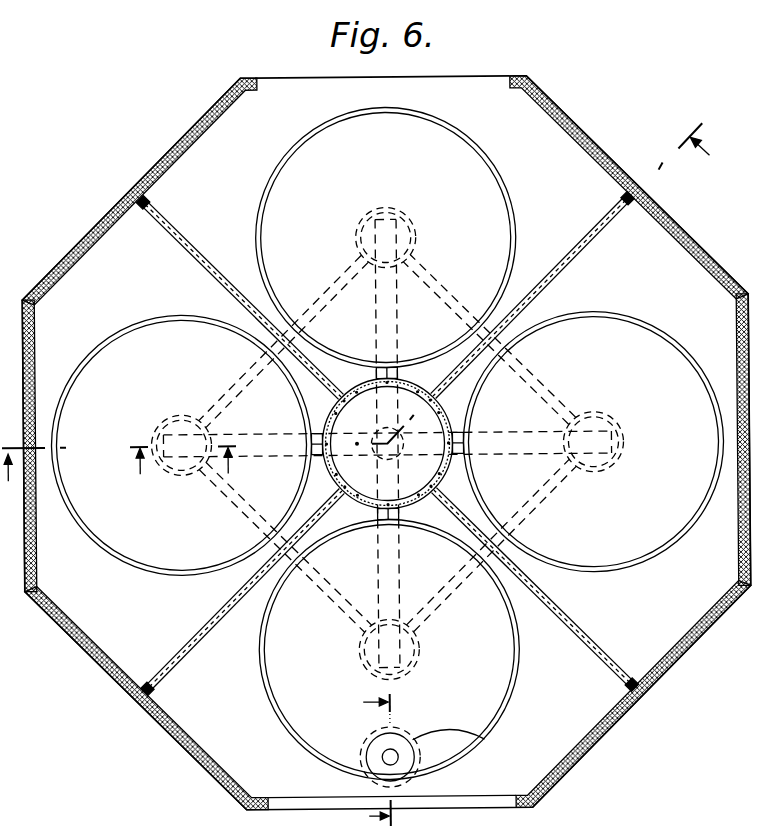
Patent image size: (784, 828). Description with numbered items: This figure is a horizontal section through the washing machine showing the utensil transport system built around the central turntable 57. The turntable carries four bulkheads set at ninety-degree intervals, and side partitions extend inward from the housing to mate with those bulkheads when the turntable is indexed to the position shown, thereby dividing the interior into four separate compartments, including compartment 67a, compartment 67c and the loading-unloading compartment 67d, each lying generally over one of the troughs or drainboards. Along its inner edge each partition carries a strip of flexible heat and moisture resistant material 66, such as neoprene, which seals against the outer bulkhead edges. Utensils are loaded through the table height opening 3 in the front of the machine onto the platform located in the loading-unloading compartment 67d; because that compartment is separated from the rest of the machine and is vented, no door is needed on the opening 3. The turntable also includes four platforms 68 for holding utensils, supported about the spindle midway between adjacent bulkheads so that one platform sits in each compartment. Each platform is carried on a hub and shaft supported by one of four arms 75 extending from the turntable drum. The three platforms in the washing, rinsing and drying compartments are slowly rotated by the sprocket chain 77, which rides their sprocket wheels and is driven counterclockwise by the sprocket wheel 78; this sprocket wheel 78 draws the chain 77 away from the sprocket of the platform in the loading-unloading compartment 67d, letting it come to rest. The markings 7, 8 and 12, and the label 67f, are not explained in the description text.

The table height opening 3 is at (487, 803).
The section line 7- 7 is at (366, 759).
The section line 8- 8 is at (363, 316).
The section line 12- 12 is at (185, 475).
The central turntable 57 is at (568, 218).
The strip of flexible heat and moisture resistant material 66 is at (156, 204).
The compartment 67a is at (707, 593).
The compartment 67c is at (131, 299).
The loading-unloading compartment 67d is at (582, 699).
The compartment 67f is at (536, 129).
The platform 68 is at (514, 184).
The arm 75 is at (263, 433).
The sprocket chain 77 is at (283, 654).
The sprocket wheel 78 is at (482, 740).